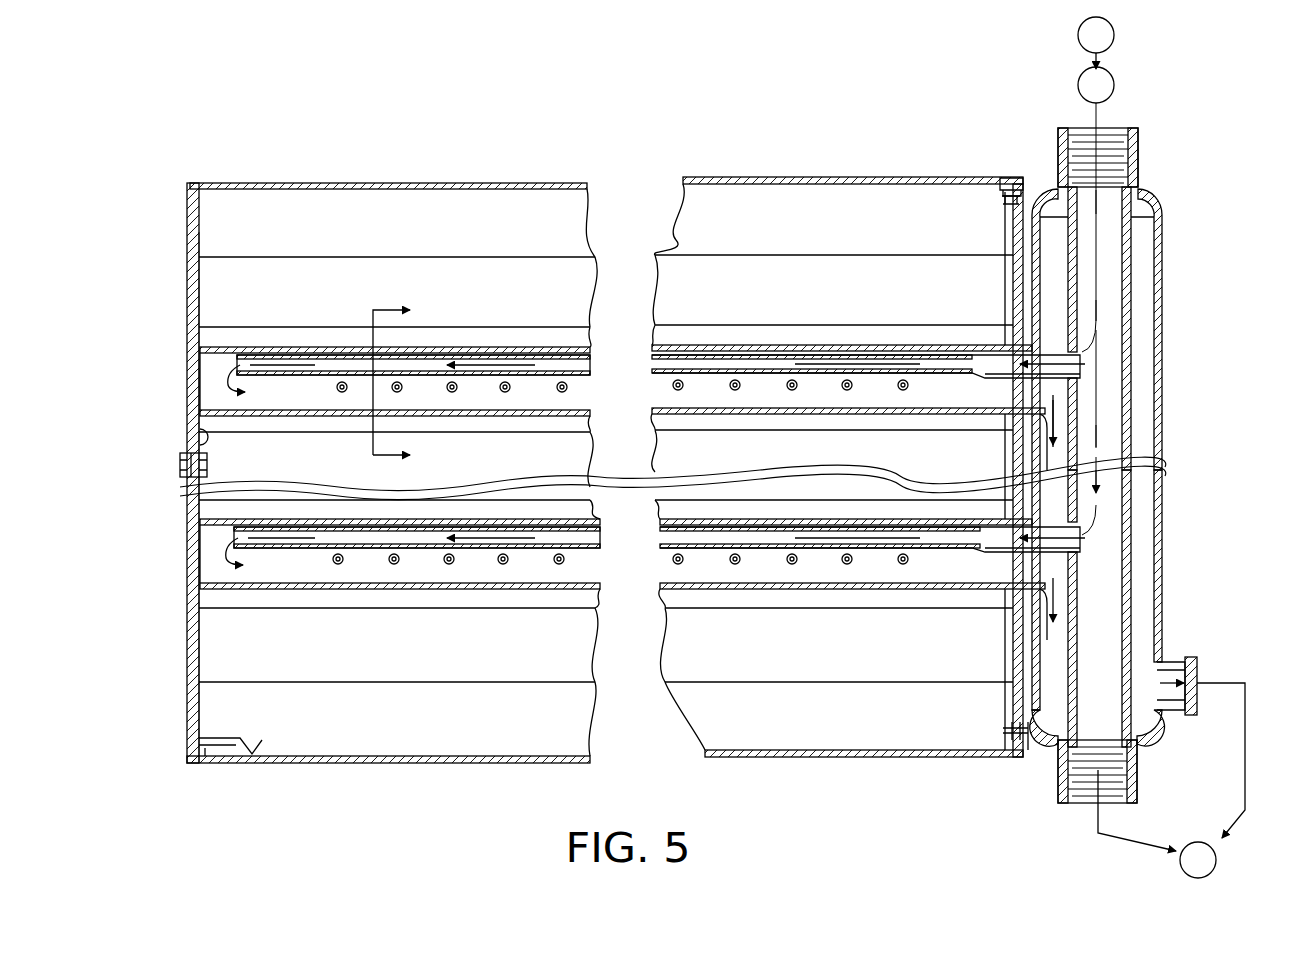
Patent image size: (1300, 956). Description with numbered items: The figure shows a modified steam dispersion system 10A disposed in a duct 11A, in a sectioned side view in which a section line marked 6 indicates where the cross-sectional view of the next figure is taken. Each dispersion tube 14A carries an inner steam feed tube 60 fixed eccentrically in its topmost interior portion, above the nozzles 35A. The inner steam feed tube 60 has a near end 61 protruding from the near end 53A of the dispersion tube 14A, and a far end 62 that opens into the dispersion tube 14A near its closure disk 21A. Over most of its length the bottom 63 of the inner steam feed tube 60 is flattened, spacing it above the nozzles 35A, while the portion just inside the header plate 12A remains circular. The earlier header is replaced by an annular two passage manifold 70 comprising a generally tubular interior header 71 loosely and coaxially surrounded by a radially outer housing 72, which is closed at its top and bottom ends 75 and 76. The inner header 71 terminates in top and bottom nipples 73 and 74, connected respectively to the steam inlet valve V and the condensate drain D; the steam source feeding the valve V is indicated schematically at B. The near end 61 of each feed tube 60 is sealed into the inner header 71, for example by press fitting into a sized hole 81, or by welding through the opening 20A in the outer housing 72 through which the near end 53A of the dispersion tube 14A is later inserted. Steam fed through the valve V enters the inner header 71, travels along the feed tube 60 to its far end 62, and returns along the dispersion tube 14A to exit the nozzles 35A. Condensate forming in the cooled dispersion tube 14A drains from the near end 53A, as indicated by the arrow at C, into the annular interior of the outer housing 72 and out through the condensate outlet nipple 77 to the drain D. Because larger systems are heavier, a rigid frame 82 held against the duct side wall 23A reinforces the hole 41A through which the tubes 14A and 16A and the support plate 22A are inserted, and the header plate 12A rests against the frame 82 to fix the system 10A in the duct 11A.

The modified system 10A is at (1208, 160).
The duct 11A is at (378, 764).
The header plate 12A is at (1005, 650).
The dispersion tube 14A is at (292, 416).
The tube 16A is at (292, 270).
The opening 20A is at (1040, 575).
The closure disk 21A is at (192, 447).
The support plate 22A is at (200, 305).
The duct side wall 23A is at (993, 183).
The nozzles 35A is at (568, 389).
The hole 41A is at (1005, 203).
The near end of dispersion tube 53A is at (1062, 402).
The inner steam feed tube 60 is at (278, 375).
The near end of inner steam feed tube 61 is at (1132, 345).
The far end of inner steam feed tube 62 is at (200, 360).
The bottom of inner steam feed tube 63 is at (936, 378).
The annular two passage manifold 70 is at (1162, 500).
The interior header 71 is at (1132, 517).
The outer housing 72 is at (1162, 548).
The top nipple 73 is at (1140, 133).
The bottom nipple 74 is at (1140, 785).
The top end of outer housing 75 is at (1160, 205).
The bottom end of outer housing 76 is at (1160, 735).
The condensate outlet nipple 77 is at (1190, 665).
The hole in inner header 81 is at (1085, 370).
The rigid frame 82 is at (1027, 753).
The section line 6- 6 is at (391, 381).
The burner B is at (1096, 43).
The steam inlet valve V is at (1096, 301).
The condensate flow C is at (1058, 598).
The condensate drain D is at (1198, 860).